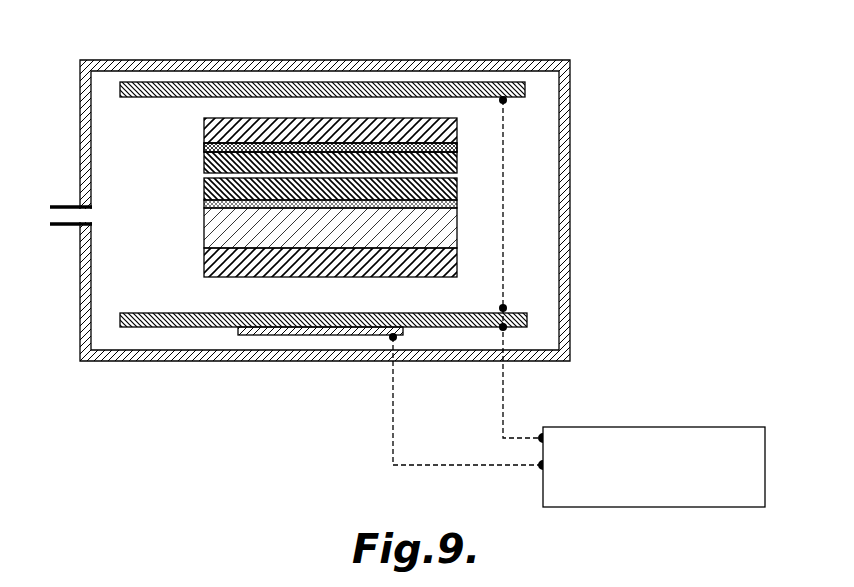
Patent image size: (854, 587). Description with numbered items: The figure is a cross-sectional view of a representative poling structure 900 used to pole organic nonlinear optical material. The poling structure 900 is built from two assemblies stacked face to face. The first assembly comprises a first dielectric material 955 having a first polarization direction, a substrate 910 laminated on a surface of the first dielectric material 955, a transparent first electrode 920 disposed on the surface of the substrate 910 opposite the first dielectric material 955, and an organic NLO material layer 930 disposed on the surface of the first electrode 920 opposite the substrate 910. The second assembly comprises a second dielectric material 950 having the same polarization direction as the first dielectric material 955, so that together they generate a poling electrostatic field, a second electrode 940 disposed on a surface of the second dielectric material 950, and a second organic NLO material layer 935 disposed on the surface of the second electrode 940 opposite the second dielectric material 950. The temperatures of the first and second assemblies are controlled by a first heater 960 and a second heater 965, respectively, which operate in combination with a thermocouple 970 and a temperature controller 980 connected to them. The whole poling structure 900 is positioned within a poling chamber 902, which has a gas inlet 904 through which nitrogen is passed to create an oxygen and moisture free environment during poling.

The poling structure 900 is at (536, 82).
The poling chamber 902 is at (295, 362).
The gas inlet 904 is at (62, 212).
The substrate 910 is at (204, 232).
The transparent first electrode 920 is at (204, 204).
The organic NLO material layer 930 is at (204, 182).
The second organic NLO material layer 935 is at (204, 152).
The second electrode 940 is at (456, 148).
The second dielectric material 950 is at (204, 122).
The first dielectric material 955 is at (204, 258).
The first heater 960 is at (178, 315).
The second heater 965 is at (200, 85).
The thermocouple 970 is at (258, 336).
The temperature controller 980 is at (766, 455).